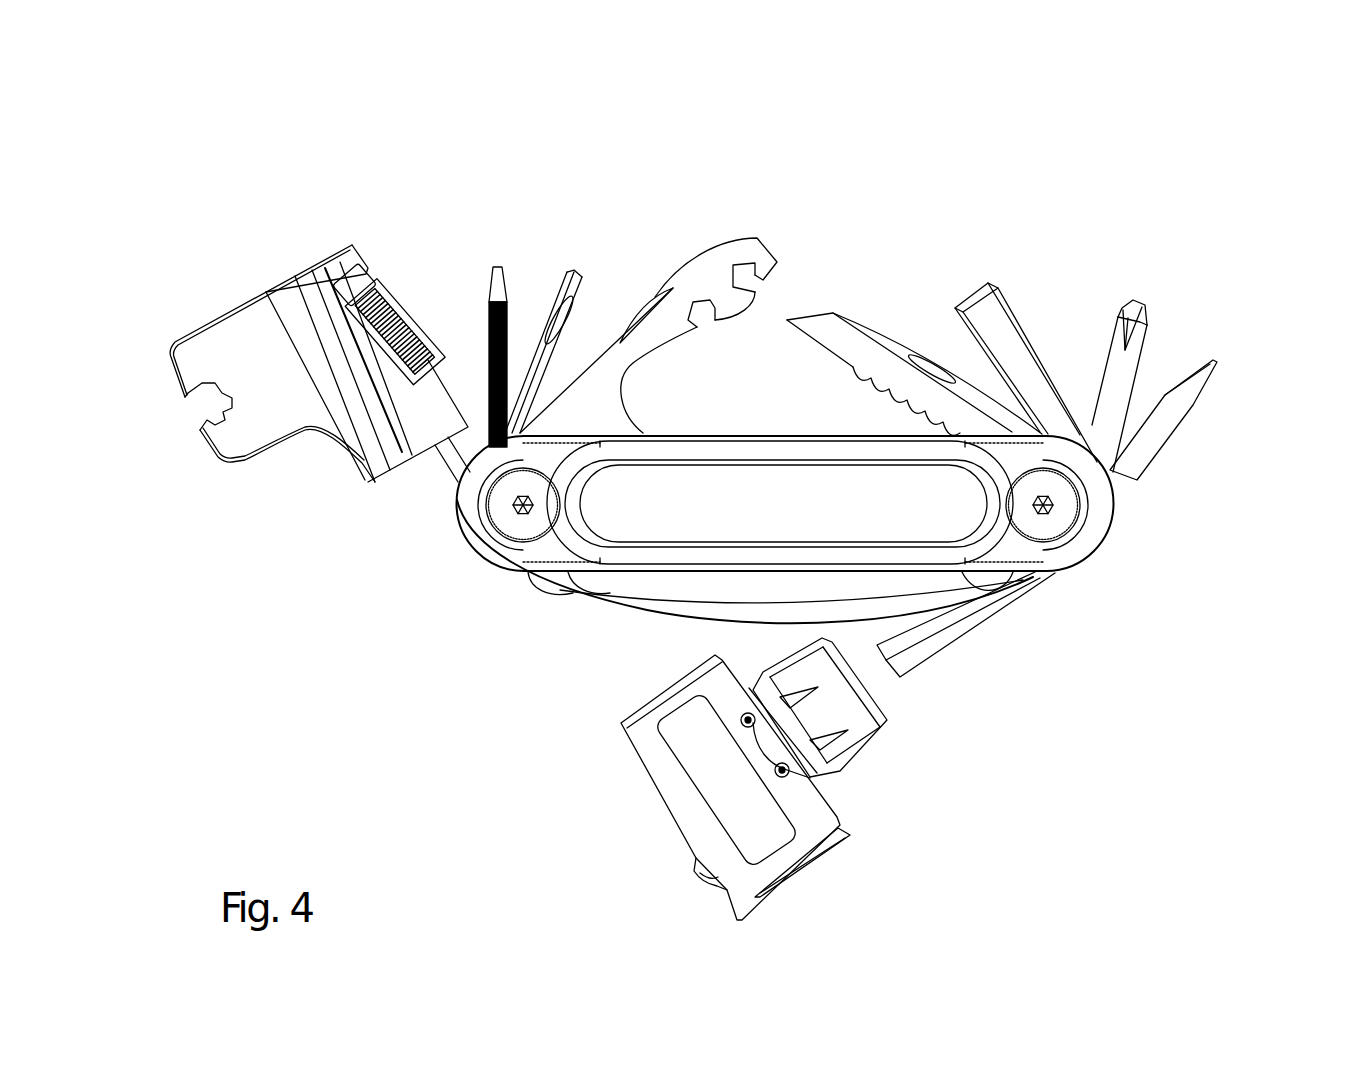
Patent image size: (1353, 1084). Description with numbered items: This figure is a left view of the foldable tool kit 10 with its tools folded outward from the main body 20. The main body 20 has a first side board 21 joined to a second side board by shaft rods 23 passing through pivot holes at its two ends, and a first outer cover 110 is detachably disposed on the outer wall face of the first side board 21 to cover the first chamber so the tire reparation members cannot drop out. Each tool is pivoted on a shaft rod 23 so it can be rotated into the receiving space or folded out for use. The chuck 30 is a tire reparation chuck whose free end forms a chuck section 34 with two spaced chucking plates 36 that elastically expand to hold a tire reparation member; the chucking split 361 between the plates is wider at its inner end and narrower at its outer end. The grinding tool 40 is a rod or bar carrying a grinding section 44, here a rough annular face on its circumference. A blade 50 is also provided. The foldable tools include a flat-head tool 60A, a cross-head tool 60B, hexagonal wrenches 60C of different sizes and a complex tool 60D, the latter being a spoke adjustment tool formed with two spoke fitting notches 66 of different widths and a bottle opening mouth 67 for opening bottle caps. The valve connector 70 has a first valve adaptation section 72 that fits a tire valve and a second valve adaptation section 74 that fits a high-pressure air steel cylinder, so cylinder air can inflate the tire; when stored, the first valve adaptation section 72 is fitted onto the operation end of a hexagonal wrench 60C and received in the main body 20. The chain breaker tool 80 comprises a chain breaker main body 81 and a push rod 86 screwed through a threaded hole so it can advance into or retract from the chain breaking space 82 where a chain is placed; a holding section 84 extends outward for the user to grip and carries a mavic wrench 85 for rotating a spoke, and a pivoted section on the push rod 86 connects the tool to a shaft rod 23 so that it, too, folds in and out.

The foldable tool kit 10 is at (1158, 192).
The main body 20 is at (532, 588).
The first side board 21 is at (1083, 535).
The shaft rod 23 is at (507, 518).
The first outer cover 110 is at (672, 510).
The chuck 30 is at (565, 238).
The chuck section 34 is at (583, 273).
The chucking plate 36 is at (560, 285).
The chucking split 361 is at (557, 327).
The grinding tool 40 is at (493, 257).
The grinding section 44 is at (487, 357).
The blade 50 is at (892, 327).
The flat-head tool 60A is at (1183, 440).
The cross-head tool 60B is at (1147, 327).
The hexagonal wrench 60C is at (1015, 307).
The complex tool 60D is at (770, 240).
The spoke fitting notch 66 is at (757, 285).
The bottle opening mouth 67 is at (632, 412).
The valve connector 70 is at (660, 830).
The first valve adaptation section 72 is at (877, 710).
The second valve adaptation section 74 is at (803, 860).
The chain breaker tool 80 is at (210, 287).
The chain breaker main body 81 is at (328, 275).
The chain breaking space 82 is at (387, 307).
The holding section 84 is at (282, 418).
The mavic wrench 85 is at (207, 405).
The push rod 86 is at (452, 458).